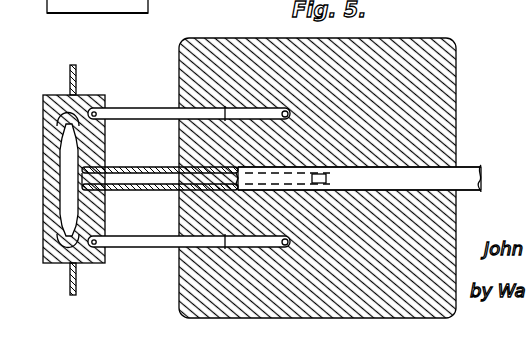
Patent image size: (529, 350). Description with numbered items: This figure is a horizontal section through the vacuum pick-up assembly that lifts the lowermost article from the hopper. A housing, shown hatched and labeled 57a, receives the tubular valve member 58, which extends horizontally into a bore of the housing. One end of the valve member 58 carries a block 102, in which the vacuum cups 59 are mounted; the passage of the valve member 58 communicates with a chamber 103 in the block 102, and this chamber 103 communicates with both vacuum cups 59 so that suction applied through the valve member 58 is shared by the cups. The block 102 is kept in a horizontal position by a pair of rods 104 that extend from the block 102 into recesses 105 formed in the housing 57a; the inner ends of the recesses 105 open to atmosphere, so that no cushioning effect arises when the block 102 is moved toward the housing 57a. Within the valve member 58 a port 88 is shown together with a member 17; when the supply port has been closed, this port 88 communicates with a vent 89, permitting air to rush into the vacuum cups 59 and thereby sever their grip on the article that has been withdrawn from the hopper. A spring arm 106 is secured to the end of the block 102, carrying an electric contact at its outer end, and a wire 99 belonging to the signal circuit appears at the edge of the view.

The mold body 57a is at (443, 90).
The tubular valve member 58 is at (143, 168).
The vacuum cups 59 is at (60, 122).
The port 88 is at (319, 174).
The vent 89 is at (350, 166).
The rod member 17 is at (338, 179).
The wire 99 is at (10, 2).
The block 102 is at (97, 140).
The chamber 103 is at (62, 170).
The rods 104 is at (134, 112).
The recesses 105 is at (258, 35).
The spring arms 106 is at (77, 72).